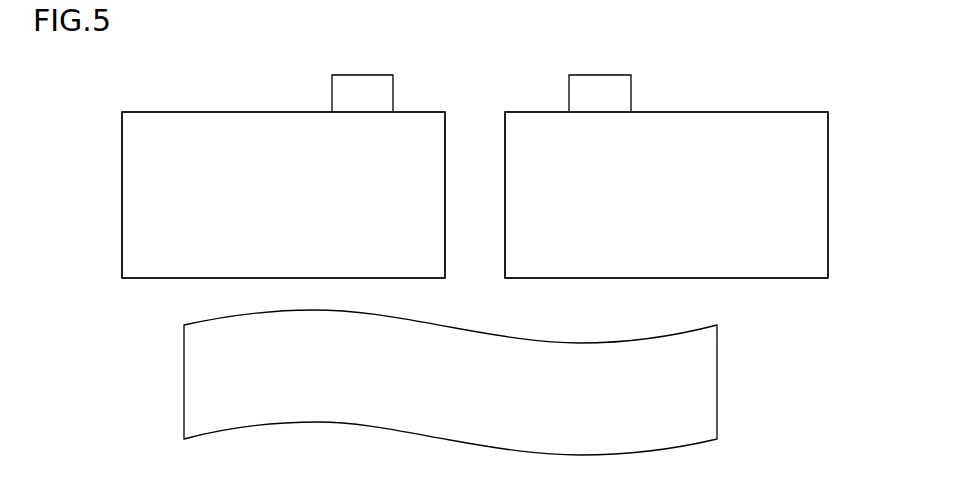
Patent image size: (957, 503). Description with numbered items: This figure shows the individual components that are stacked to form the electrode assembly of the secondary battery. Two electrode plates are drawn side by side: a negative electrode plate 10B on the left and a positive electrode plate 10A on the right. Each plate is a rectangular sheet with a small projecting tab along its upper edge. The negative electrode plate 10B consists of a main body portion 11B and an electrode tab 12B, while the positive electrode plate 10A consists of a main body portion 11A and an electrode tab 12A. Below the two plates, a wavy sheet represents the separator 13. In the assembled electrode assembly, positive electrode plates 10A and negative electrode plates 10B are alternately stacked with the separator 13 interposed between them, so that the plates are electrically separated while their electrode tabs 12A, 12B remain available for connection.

The positive electrode plate 10A is at (853, 115).
The negative electrode plate 10B is at (104, 109).
The main body portion 11A is at (828, 219).
The main body portion 11B is at (122, 220).
The electrode tab 12A is at (602, 75).
The electrode tab 12B is at (363, 75).
The separator 13 is at (460, 443).